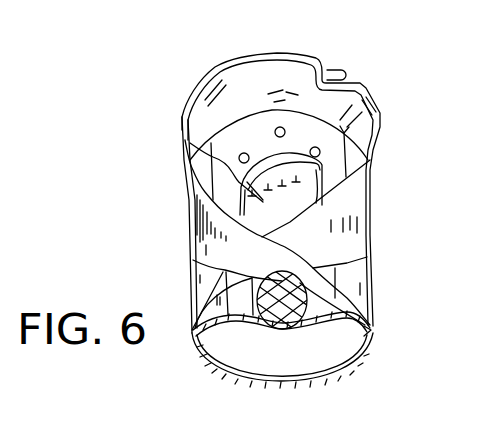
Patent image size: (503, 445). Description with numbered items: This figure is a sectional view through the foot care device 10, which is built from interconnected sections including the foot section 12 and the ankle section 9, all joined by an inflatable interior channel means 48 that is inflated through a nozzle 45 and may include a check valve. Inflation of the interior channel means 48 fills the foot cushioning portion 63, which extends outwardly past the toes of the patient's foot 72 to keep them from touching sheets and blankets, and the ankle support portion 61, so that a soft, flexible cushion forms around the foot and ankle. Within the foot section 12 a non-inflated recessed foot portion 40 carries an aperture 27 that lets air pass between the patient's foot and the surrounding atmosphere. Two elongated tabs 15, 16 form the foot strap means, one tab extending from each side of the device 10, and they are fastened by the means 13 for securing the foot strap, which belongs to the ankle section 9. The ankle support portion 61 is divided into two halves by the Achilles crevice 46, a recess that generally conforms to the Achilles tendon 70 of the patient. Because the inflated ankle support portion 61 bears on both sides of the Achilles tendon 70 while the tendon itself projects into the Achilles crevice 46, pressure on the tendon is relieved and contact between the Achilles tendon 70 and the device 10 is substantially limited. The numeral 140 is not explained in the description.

The ankle section 9 is at (188, 368).
The foot care device 10 is at (384, 102).
The foot section 12 is at (161, 178).
The means for securing foot strap means 13 is at (370, 337).
The elongated tab 15 is at (194, 248).
The elongated tab 16 is at (349, 247).
The aperture 27 is at (278, 127).
The recessed foot portion 40 is at (333, 170).
The nozzle 45 is at (335, 68).
The Achilles crevice 46 is at (280, 333).
The inflatable interior channel means 48 is at (227, 97).
The ankle support portion 61 is at (333, 375).
The foot cushioning portion 63 is at (360, 86).
The Achilles tendon 70 is at (248, 330).
The foot 72 is at (217, 134).
The base 140 is at (314, 440).